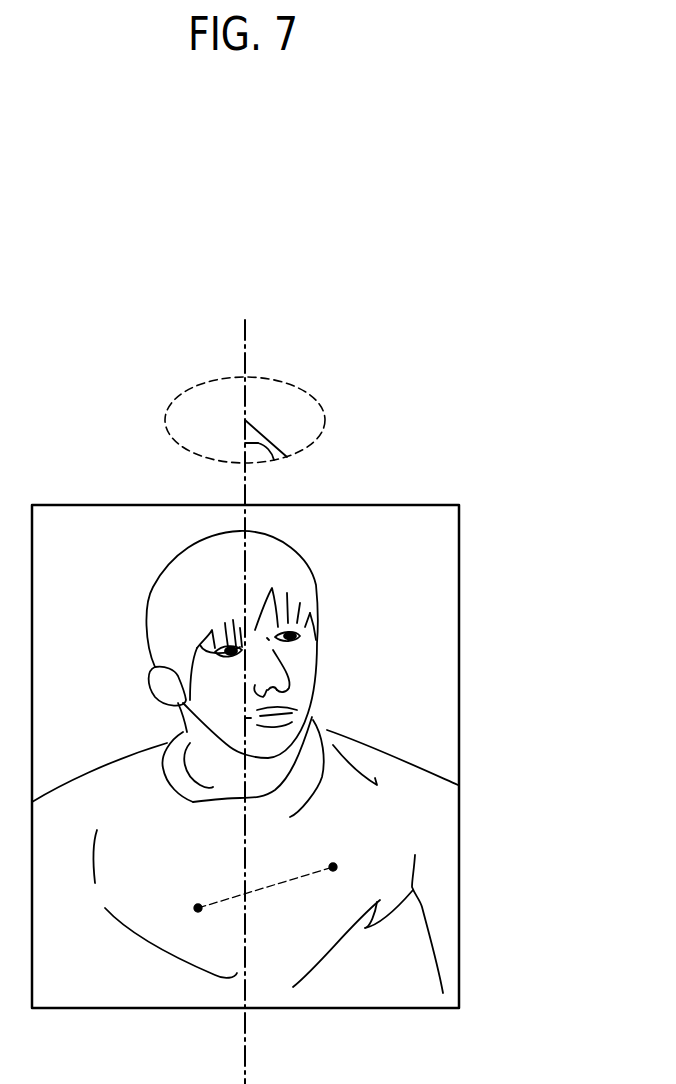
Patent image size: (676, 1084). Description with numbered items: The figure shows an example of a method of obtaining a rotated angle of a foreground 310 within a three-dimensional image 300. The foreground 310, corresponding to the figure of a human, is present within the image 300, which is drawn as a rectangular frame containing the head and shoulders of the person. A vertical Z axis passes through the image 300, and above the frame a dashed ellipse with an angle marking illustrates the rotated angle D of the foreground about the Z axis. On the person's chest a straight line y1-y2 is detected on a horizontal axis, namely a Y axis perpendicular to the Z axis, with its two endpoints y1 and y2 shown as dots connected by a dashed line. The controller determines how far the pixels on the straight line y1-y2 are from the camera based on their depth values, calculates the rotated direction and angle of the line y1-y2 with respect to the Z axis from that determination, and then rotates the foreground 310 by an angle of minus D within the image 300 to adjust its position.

The three-dimensional image 300 is at (510, 576).
The foreground 310 is at (292, 762).
The Z axis Z is at (245, 690).
The rotated angle D is at (274, 460).
The first endpoint of straight line y1-y2 y1 is at (196, 896).
The second endpoint of straight line y1- y2 is at (333, 853).